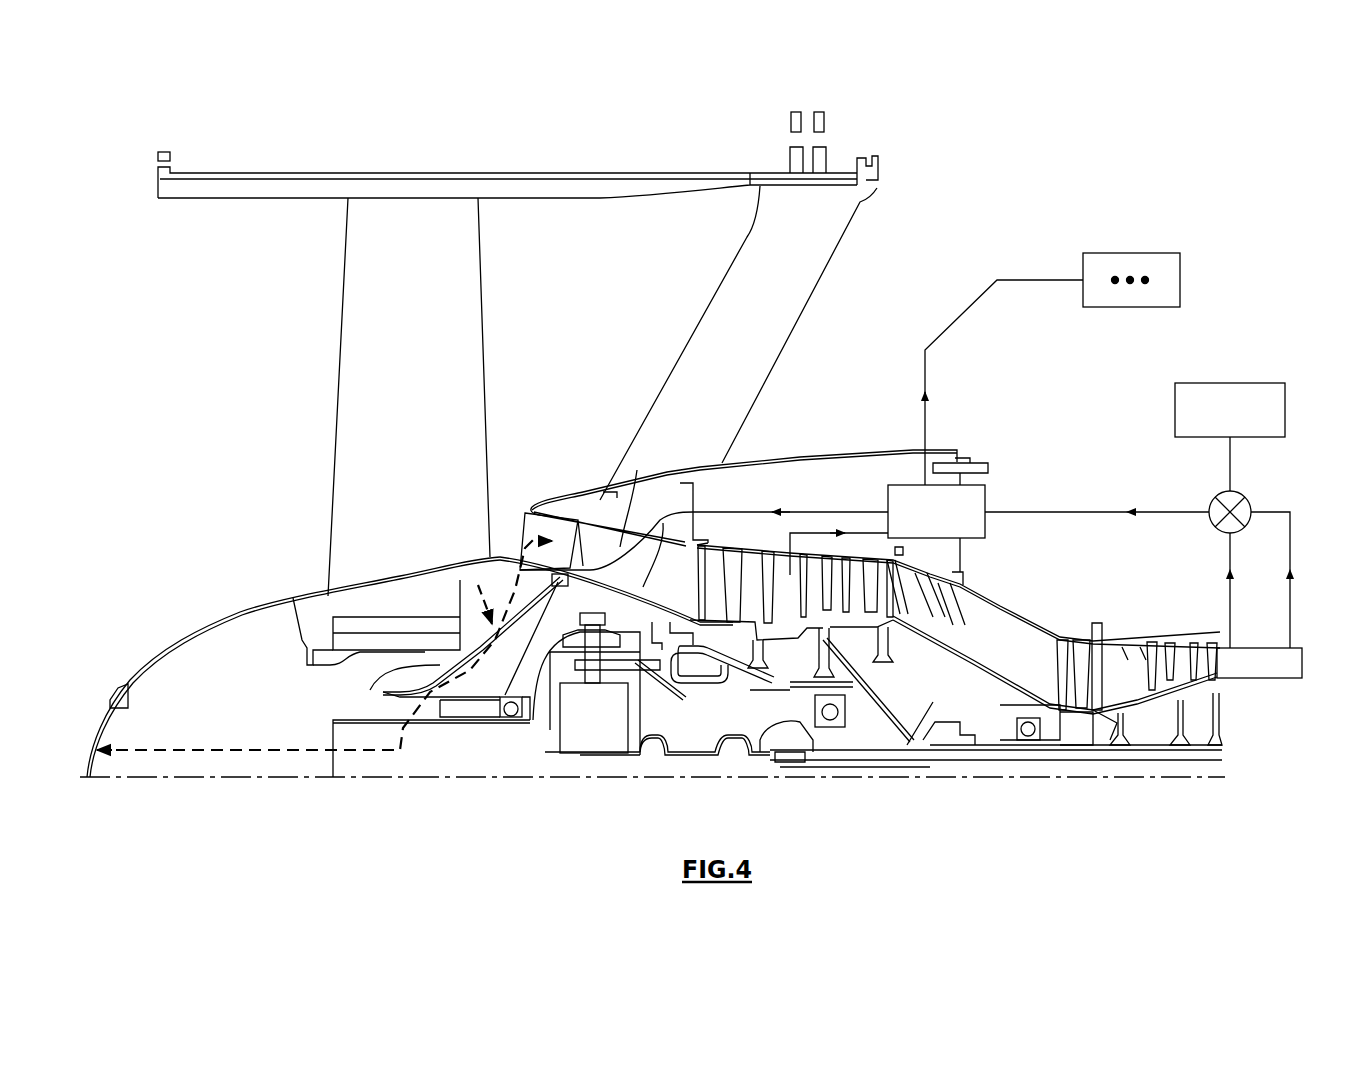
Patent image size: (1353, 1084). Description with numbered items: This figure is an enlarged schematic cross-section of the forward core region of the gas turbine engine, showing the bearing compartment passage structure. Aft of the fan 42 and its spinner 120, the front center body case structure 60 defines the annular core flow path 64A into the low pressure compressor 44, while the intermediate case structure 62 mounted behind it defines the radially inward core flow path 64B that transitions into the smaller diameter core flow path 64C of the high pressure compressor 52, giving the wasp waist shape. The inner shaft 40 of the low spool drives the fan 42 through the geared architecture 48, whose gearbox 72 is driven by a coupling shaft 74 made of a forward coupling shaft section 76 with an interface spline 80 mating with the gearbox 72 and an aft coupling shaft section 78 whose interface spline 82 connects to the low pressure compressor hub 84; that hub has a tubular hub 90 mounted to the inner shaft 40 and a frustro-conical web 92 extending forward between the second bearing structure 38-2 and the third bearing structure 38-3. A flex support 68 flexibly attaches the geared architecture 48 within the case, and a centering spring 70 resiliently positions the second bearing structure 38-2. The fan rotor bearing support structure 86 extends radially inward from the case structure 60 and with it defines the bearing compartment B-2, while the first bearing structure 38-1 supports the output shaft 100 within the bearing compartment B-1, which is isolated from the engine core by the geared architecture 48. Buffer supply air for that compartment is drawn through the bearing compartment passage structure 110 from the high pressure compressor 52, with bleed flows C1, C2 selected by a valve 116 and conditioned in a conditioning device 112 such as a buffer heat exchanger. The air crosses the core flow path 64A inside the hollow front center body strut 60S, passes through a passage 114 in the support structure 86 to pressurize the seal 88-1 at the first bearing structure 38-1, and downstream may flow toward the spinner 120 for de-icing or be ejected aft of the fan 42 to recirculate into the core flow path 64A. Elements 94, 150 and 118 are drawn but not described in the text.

The fan 42 is at (421, 377).
The front center body case structure 60 is at (578, 490).
The hollow front center body strut 60S is at (620, 495).
The annular core flow path 64A is at (620, 558).
The core flow path 64B is at (1030, 660).
The core flow path 64C is at (1150, 683).
The intermediate case structure 62 is at (1003, 603).
The spinner 120 is at (190, 636).
The fan rotor bearing support structure 86 is at (480, 566).
The passage 114 is at (463, 610).
The seal 88-1 is at (368, 688).
The bearing compartment B-1 is at (470, 688).
The #1 bearing structure 38-1 is at (460, 714).
The output shaft 100 is at (480, 724).
The geared architecture 48 is at (546, 747).
The gearbox 72 is at (605, 725).
The interface spline 80 is at (595, 758).
The centering spring 70 is at (652, 621).
The flex support 68 is at (672, 692).
The coupling shaft 74 is at (697, 764).
The forward coupling shaft section 76 is at (672, 756).
The bearing compartment B-2 is at (763, 713).
The aft coupling shaft section 78 is at (765, 742).
The #2 bearing structure 38-2 is at (760, 737).
The interface spline 82 is at (790, 766).
The frustro-conical web 92 is at (862, 692).
The tubular hub 90 is at (920, 722).
The low pressure compressor hub 84 is at (863, 753).
The inner shaft 40 is at (920, 772).
The low pressure compressor 44 is at (813, 607).
The rotor 94 is at (840, 632).
The #3 bearing structure 38-3 is at (1033, 742).
The bearing support 150 is at (1095, 742).
The high pressure compressor 52 is at (1168, 618).
The bleed passage 118 is at (903, 552).
The conditioning device 112 is at (985, 495).
The #1 bearing compartment passage structure 110 is at (1010, 491).
The valve 116 is at (1240, 490).
The bleed flow C1 is at (1235, 596).
The bleed flow C2 is at (1283, 546).